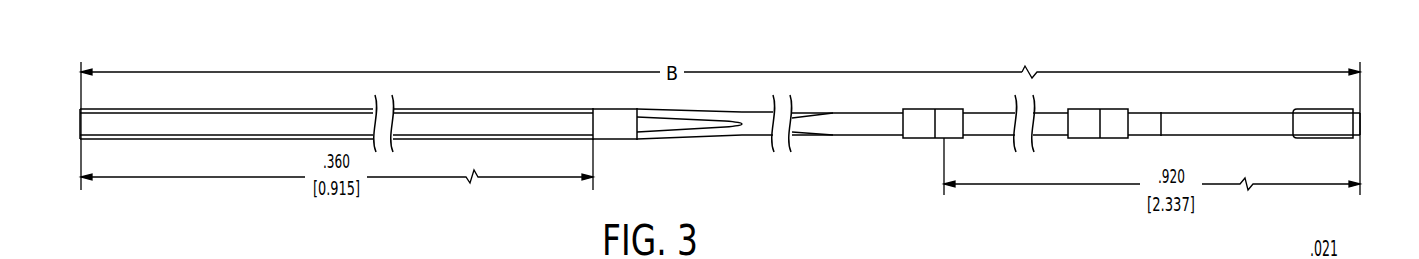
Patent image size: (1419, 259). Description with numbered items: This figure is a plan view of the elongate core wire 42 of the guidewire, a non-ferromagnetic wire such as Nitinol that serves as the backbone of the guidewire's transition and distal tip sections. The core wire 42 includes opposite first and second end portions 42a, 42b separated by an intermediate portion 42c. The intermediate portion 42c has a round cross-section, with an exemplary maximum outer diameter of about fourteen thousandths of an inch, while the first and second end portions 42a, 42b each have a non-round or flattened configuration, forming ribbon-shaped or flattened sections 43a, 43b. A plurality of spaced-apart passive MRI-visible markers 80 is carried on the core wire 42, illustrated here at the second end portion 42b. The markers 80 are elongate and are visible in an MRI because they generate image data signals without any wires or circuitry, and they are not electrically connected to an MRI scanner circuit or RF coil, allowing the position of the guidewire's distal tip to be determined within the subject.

The elongate core wire 42 is at (1124, 92).
The first end portion 42a is at (225, 110).
The second end portion 42b is at (1243, 112).
The intermediate portion 42c is at (742, 110).
The flattened section 43a is at (280, 123).
The flattened section 43b is at (1190, 123).
The passive MRI-visible marker 80 is at (920, 120).